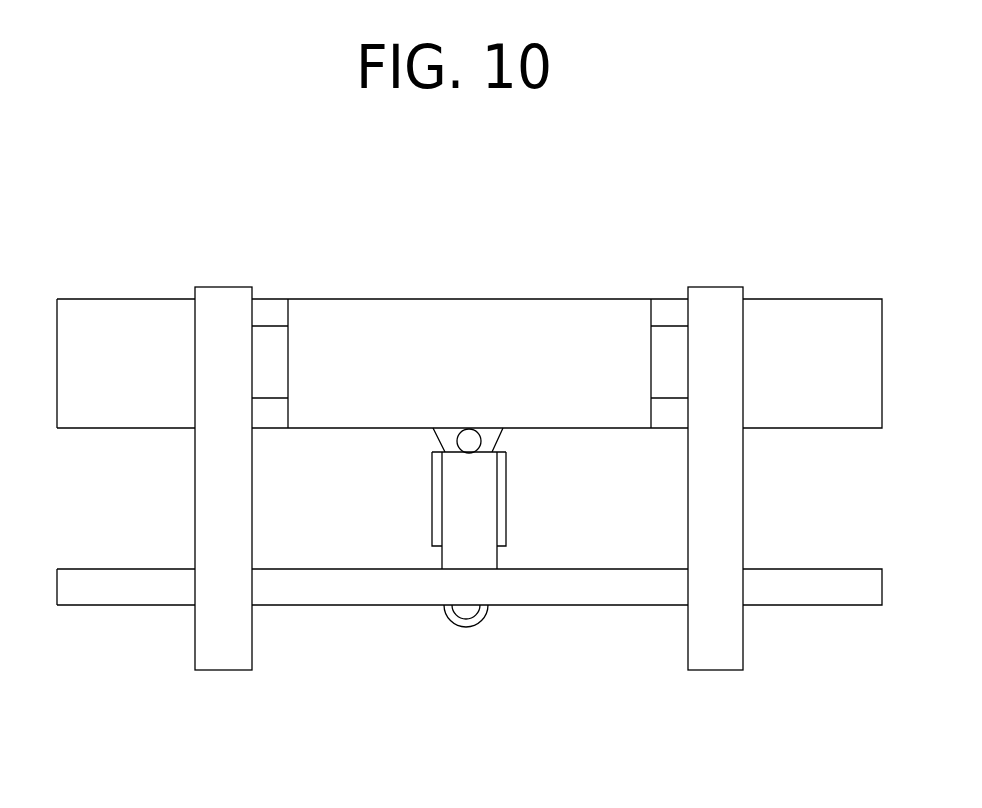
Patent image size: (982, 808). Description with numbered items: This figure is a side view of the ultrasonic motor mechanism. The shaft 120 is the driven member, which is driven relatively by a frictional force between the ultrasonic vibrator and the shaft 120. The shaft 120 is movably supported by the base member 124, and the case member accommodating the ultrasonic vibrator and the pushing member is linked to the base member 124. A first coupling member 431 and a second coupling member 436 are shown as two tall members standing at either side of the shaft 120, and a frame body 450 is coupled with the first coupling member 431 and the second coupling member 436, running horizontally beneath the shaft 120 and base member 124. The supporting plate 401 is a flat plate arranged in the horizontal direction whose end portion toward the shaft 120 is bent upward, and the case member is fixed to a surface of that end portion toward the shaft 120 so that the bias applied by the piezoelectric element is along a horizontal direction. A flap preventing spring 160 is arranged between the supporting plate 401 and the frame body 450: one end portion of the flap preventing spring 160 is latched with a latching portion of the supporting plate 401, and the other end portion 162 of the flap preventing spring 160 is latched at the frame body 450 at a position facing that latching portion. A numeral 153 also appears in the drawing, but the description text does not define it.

The supporting plate 401 is at (105, 322).
The first coupling member 431 is at (220, 302).
The base member 124 is at (499, 320).
The shaft 120 is at (668, 345).
The second coupling member 436 is at (713, 302).
The frame body 450 is at (105, 597).
The slider 153 is at (474, 509).
The flap preventing spring 160 is at (432, 497).
The other end portion 162 is at (465, 618).